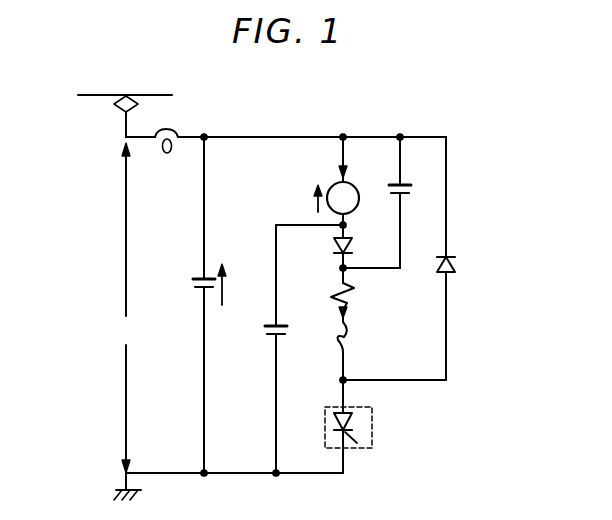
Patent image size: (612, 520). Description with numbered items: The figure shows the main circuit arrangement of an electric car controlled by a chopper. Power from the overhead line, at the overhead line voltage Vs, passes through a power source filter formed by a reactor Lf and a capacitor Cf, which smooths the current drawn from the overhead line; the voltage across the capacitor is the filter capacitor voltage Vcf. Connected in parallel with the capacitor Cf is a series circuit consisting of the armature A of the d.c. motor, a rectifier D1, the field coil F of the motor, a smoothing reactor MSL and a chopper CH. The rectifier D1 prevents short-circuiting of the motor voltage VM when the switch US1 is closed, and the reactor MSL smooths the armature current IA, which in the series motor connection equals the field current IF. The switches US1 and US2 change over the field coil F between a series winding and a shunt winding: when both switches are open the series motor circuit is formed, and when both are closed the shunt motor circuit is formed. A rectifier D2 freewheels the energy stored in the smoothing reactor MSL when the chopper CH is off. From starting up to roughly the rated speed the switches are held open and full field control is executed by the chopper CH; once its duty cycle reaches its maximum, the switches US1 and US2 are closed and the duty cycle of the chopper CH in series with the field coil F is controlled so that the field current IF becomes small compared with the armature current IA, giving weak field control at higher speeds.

The reactor Lf is at (167, 153).
The overhead line voltage Vs is at (125, 308).
The capacitor Cf is at (194, 281).
The filter capacitor voltage Vcf is at (241, 284).
The switch US2 is at (266, 336).
The armature current IA is at (358, 162).
The armature A is at (360, 201).
The motor voltage VM is at (316, 199).
The switch US1 is at (405, 196).
The rectifier D1 is at (333, 246).
The rectifier D2 is at (456, 266).
The field coil F is at (356, 290).
The field current IF is at (336, 316).
The reactor MSL is at (349, 339).
The chopper CH is at (372, 425).